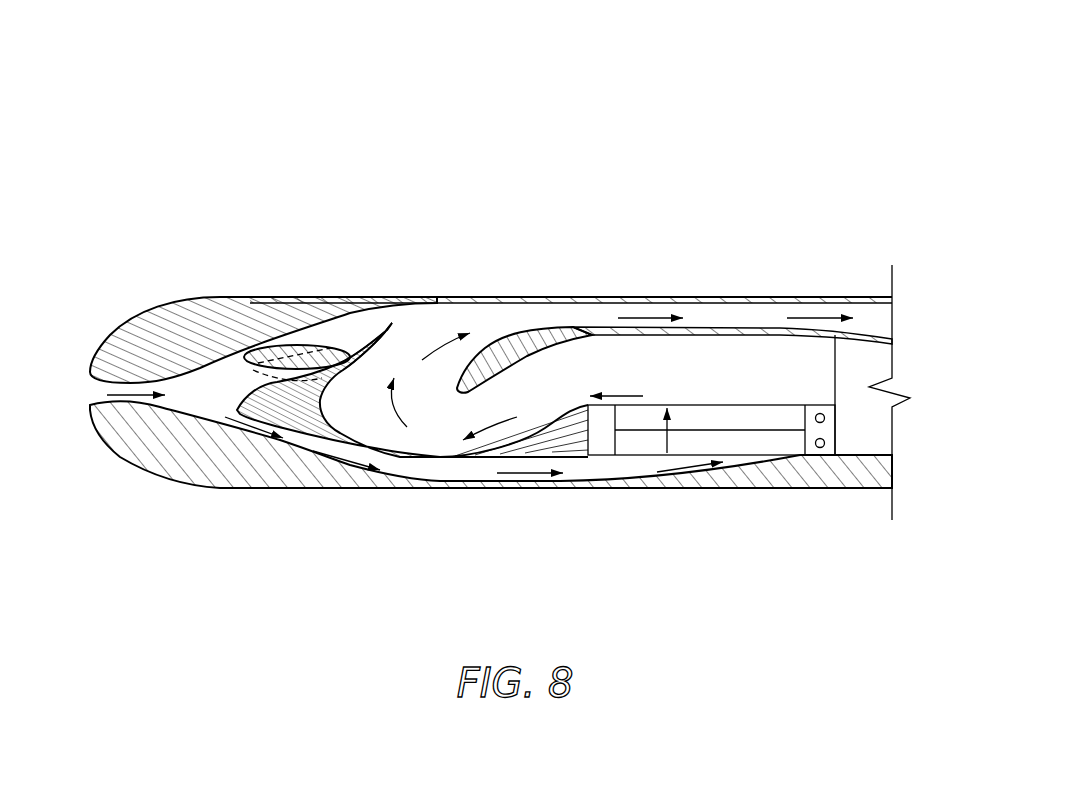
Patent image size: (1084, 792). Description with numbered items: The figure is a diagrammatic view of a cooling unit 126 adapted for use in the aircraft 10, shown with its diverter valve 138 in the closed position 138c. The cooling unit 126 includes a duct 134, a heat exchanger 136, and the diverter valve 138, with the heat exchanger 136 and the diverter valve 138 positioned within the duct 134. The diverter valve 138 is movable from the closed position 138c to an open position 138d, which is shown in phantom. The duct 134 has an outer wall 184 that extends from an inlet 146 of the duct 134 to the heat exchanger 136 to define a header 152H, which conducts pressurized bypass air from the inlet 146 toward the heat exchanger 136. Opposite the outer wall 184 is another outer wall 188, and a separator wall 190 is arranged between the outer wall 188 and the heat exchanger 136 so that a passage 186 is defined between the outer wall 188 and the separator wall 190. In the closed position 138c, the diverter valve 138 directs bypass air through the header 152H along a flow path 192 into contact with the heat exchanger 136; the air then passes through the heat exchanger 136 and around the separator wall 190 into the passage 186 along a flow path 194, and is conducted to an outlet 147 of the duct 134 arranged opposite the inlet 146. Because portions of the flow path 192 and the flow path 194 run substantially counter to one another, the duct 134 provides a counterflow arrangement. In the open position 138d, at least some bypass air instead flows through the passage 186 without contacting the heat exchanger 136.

The aircraft 10 is at (854, 78).
The cooling unit 126 is at (797, 190).
The duct 134 is at (670, 296).
The heat exchanger 136 is at (710, 415).
The diverter valve 138 is at (334, 344).
The closed position 138c is at (314, 340).
The open position 138d is at (246, 379).
The inlet 146 is at (92, 399).
The outlet 147 is at (878, 327).
The header 152H is at (457, 470).
The outer wall 184 is at (608, 492).
The passage 186 is at (554, 323).
The outer wall 188 is at (459, 299).
The separator wall 190 is at (519, 356).
The flow path 192 is at (518, 475).
The flow path 194 is at (630, 394).